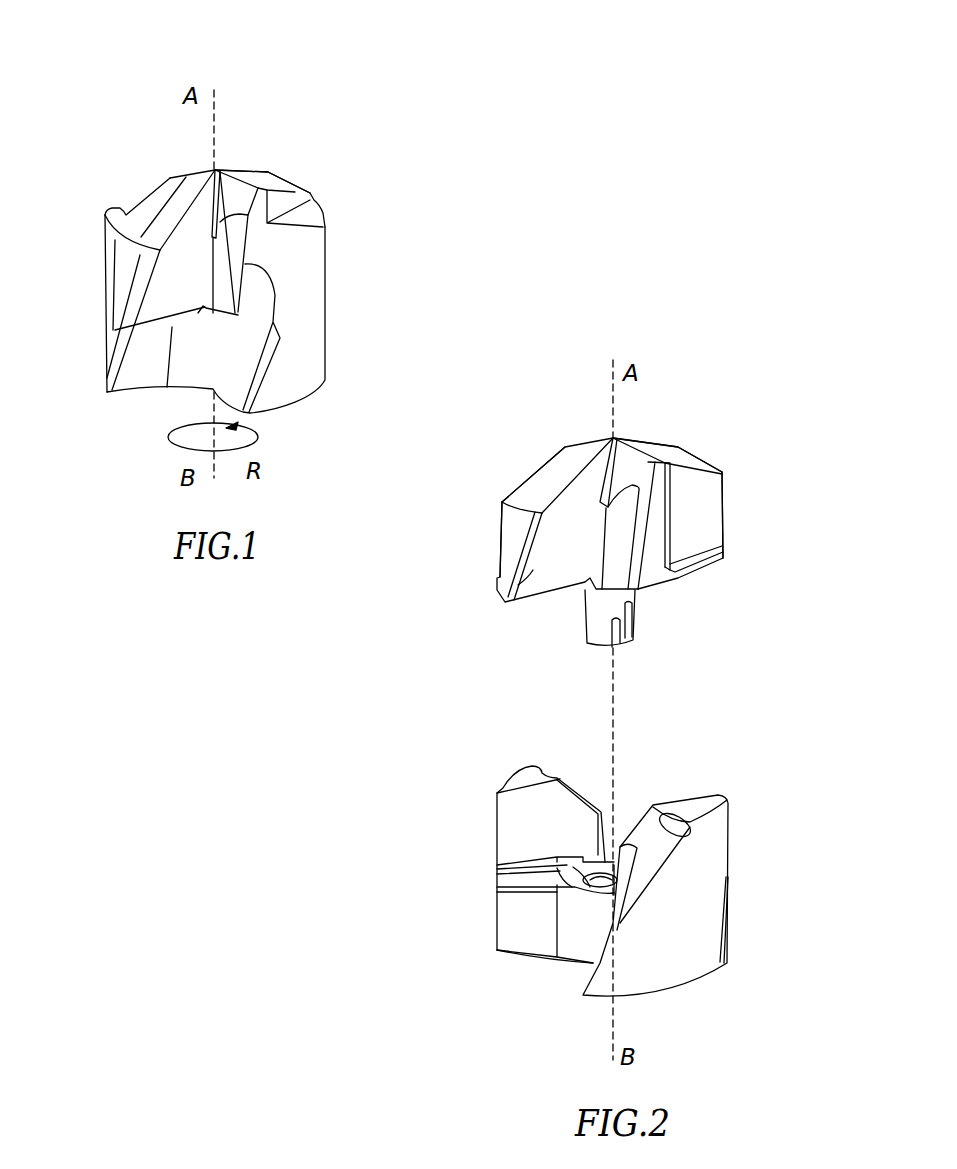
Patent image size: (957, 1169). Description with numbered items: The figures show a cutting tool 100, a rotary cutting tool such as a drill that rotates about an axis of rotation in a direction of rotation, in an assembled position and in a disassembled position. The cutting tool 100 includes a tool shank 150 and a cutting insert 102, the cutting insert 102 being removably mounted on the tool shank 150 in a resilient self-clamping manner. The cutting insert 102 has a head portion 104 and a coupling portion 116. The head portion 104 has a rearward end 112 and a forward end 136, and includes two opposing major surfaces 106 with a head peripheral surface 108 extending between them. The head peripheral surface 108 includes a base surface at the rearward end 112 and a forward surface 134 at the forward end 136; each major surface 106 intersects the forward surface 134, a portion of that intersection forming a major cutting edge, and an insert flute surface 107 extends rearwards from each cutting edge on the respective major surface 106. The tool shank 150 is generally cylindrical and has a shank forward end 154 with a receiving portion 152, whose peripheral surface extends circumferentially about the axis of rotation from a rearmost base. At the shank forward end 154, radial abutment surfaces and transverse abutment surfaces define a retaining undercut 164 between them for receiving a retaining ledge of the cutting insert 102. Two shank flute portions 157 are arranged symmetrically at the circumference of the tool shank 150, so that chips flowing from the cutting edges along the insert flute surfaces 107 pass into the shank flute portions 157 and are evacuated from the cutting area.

In FIG. 1, the cutting tool 100 is at (282, 78).
In FIG. 2, the cutting tool 100 is at (688, 328).
In FIG. 1, the cutting insert 102 is at (155, 168).
In FIG. 2, the cutting insert 102 is at (562, 405).
In FIG. 1, the head portion 104 is at (318, 148).
In FIG. 2, the head portion 104 is at (752, 500).
In FIG. 1, the major surfaces 106 is at (190, 284).
In FIG. 2, the insert flute surface 107 is at (500, 578).
In FIG. 1, the head peripheral surface 108 is at (243, 172).
In FIG. 2, the head peripheral surface 108 is at (520, 492).
In FIG. 2, the rearward end 112 is at (697, 588).
In FIG. 2, the coupling portion 116 is at (577, 610).
In FIG. 2, the forward surface 134 is at (557, 468).
In FIG. 2, the forward end 136 is at (679, 415).
In FIG. 1, the tool shank 150 is at (335, 308).
In FIG. 2, the tool shank 150 is at (723, 732).
In FIG. 2, the receiving portion 152 is at (622, 830).
In FIG. 2, the shank forward end 154 is at (728, 788).
In FIG. 2, the shank flute portions 157 is at (575, 930).
In FIG. 2, the retaining undercut 164 is at (507, 868).